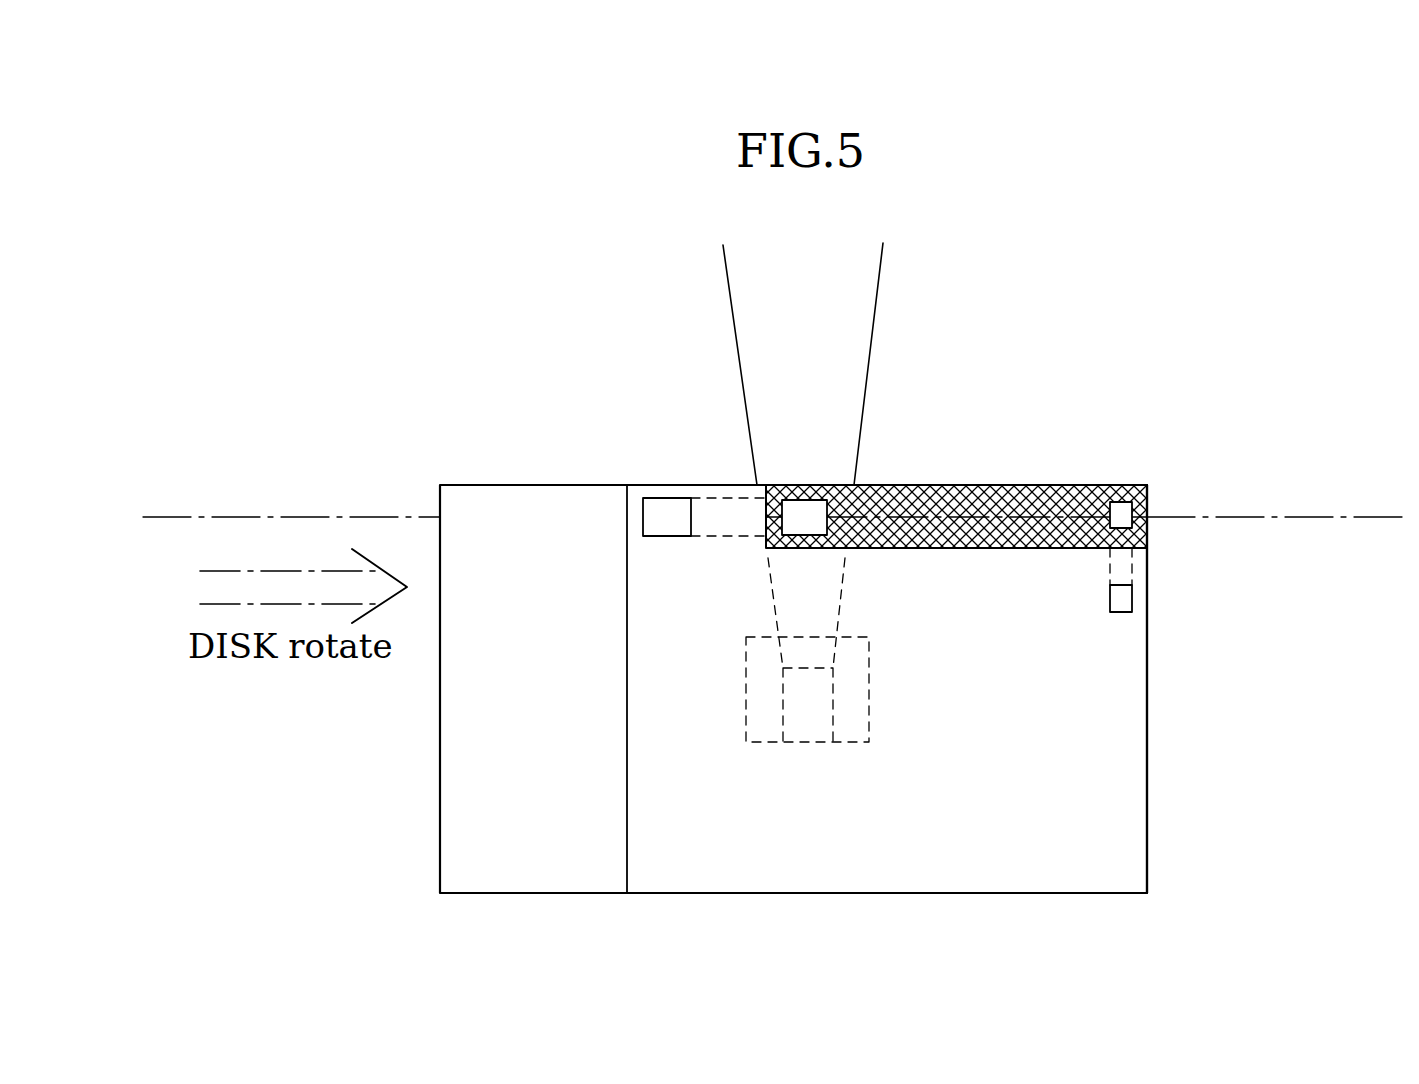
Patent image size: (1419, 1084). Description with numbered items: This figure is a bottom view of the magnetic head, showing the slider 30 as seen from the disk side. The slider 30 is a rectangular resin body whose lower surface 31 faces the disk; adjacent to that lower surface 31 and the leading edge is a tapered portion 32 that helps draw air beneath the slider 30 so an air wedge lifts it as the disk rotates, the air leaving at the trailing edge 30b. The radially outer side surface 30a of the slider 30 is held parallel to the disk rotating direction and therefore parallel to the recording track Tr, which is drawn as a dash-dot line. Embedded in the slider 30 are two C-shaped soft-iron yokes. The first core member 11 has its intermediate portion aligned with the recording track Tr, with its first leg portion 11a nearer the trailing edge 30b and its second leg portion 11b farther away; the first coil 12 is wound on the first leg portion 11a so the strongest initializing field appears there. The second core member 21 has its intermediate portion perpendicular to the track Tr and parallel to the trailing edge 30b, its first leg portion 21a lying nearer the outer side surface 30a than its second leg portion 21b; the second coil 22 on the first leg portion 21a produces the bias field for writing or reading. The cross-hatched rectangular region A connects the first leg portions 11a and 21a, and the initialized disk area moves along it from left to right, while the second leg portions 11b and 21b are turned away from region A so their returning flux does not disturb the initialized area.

The recording track Tr is at (291, 517).
The first core member 11 is at (712, 487).
The first leg portion 11a is at (773, 548).
The second leg portion 11b is at (657, 528).
The first coil 12 is at (817, 555).
The second core member 21 is at (1153, 503).
The first leg portion 21a is at (1122, 507).
The second leg portion 21b is at (1125, 597).
The second coil 22 is at (1077, 555).
The slider 30 is at (831, 485).
The radially outer side surface 30a is at (972, 484).
The trailing edge 30b is at (1148, 698).
The lower surface 31 is at (1088, 835).
The tapered portion 32 is at (524, 857).
The cross-hatched rectangular region A is at (980, 550).